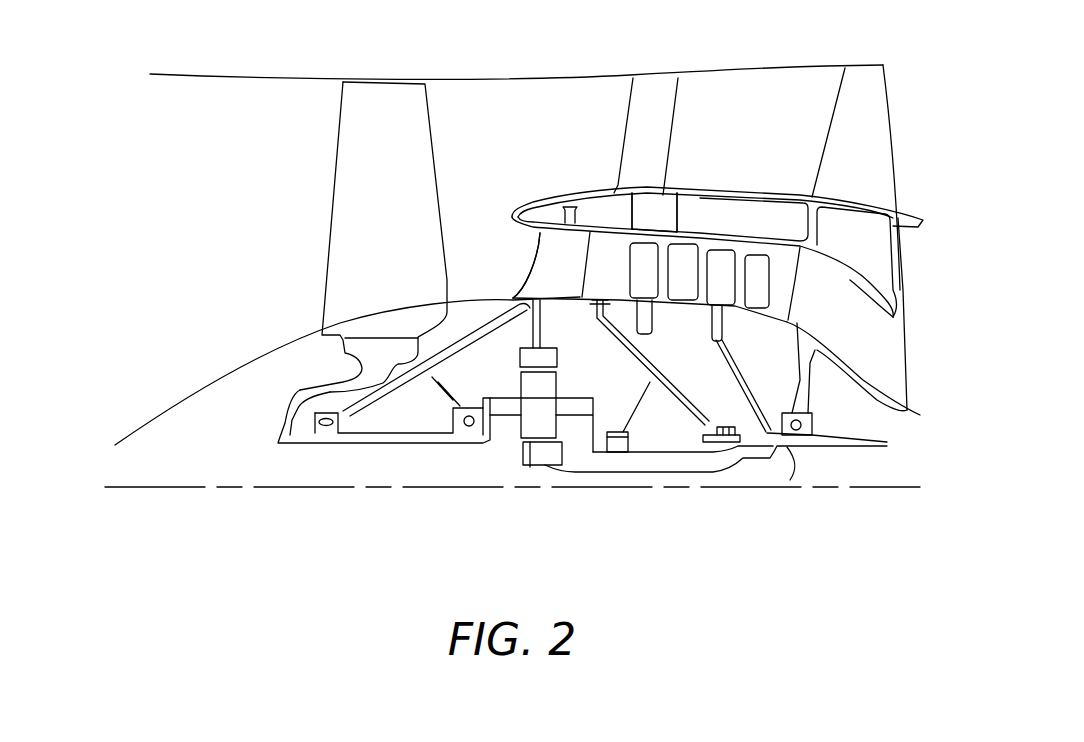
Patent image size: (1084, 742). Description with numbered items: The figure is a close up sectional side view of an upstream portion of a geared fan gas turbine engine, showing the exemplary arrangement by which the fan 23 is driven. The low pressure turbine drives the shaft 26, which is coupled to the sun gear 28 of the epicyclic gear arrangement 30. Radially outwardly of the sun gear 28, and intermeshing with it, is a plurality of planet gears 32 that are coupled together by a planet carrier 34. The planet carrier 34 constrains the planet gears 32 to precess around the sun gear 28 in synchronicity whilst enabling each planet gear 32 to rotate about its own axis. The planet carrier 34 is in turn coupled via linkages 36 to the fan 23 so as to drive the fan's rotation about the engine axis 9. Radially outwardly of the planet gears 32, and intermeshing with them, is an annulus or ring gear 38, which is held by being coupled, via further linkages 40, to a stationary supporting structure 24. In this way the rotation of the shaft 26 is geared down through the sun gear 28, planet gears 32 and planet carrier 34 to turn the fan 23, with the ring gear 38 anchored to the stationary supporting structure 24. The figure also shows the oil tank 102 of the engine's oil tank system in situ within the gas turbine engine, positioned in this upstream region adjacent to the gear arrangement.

The engine axis 9 is at (211, 490).
The fan 23 is at (343, 186).
The stationary supporting structure 24 is at (543, 265).
The shaft 26 is at (665, 468).
The sun gear 28 is at (540, 457).
The epicyclic gear arrangement 30 is at (512, 433).
The planet gears 32 is at (530, 428).
The planet carrier 34 is at (593, 425).
The linkages 36 is at (490, 432).
The ring gear 38 is at (538, 357).
The linkages 40 is at (538, 328).
The oil tank 102 is at (648, 205).